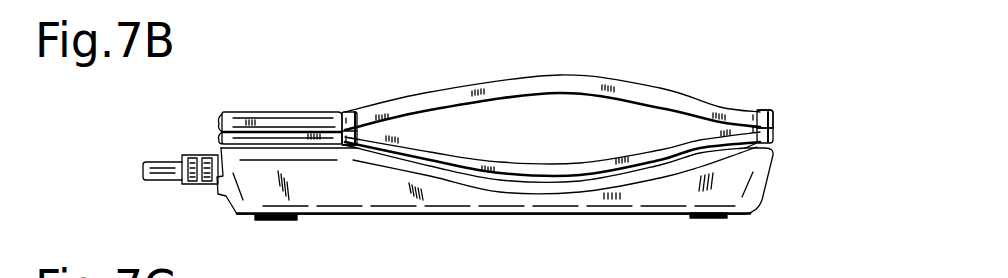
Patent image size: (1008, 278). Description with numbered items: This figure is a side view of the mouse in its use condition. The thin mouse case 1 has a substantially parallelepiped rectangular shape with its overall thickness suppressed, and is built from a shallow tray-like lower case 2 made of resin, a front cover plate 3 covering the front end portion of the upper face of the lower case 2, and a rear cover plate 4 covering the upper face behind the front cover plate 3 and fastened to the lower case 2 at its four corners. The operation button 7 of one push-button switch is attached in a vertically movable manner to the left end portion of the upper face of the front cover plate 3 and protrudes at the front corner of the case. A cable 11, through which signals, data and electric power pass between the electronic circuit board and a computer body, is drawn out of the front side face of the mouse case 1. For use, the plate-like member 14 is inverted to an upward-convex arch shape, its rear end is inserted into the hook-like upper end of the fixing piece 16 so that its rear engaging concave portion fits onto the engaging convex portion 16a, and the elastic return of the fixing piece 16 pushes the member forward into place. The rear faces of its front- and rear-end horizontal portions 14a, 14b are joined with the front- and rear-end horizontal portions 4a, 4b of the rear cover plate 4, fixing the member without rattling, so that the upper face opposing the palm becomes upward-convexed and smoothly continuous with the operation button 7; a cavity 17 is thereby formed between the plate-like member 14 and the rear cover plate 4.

The mouse case 1 is at (773, 182).
The lower case 2 is at (380, 188).
The front cover plate 3 is at (297, 135).
The rear cover plate 4 is at (580, 170).
The front-end horizontal portion of the rear cover plate 4a is at (362, 137).
The rear-end horizontal portion of the rear cover plate 4b is at (747, 142).
The operation button 7 is at (280, 112).
The cable 11 is at (165, 163).
The plate-like member 14 is at (590, 78).
The front-end horizontal portion of the plate-like member 14a is at (357, 113).
The rear-end horizontal portion of the plate-like member 14b is at (760, 108).
The fixing piece 16 is at (776, 125).
The engaging convex portion 16a is at (776, 116).
The cavity 17 is at (527, 125).